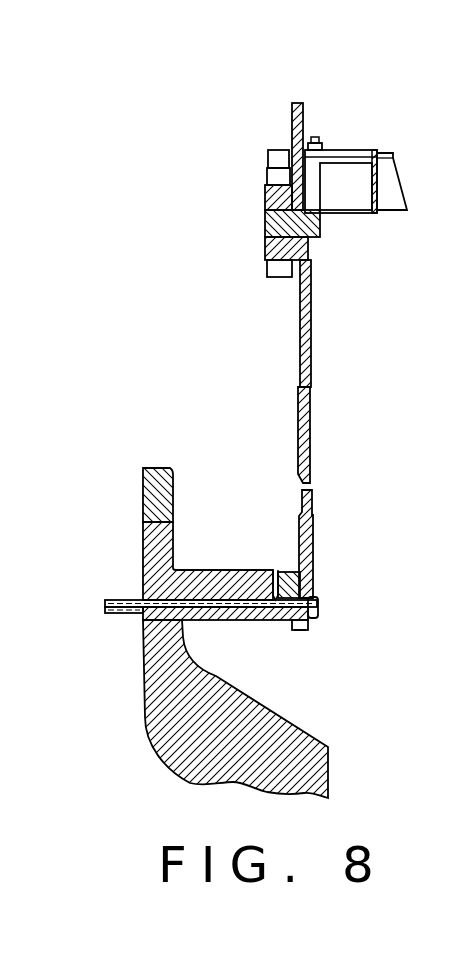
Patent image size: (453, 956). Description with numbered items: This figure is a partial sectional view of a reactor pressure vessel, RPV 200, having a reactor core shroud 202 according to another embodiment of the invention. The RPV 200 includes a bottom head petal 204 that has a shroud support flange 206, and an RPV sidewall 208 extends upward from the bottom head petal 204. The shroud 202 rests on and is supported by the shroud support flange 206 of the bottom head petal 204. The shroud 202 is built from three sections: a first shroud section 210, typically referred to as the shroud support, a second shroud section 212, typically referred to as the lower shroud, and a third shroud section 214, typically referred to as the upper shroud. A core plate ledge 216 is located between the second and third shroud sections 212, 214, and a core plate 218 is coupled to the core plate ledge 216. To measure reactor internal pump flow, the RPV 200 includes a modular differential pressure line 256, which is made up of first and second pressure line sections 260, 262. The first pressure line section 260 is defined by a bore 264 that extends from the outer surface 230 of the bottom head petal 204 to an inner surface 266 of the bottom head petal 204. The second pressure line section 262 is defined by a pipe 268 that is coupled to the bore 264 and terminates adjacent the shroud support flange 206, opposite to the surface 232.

The RPV 200 is at (236, 150).
The reactor core shroud 202 is at (331, 302).
The bottom head petal 204 is at (153, 748).
The shroud support flange 206 is at (318, 602).
The RPV sidewall 208 is at (143, 503).
The first shroud section 210 is at (310, 450).
The second shroud section 212 is at (312, 347).
The third shroud section 214 is at (304, 113).
The core plate ledge 216 is at (265, 225).
The core plate 218 is at (357, 150).
The outer surface 230 is at (145, 652).
The surface 232 is at (318, 598).
The differential pressure line 256 is at (207, 600).
The first pressure line section 260 is at (213, 620).
The second pressure line section 262 is at (308, 626).
The bore 264 is at (103, 603).
The inner surface 266 is at (272, 622).
The pipe 268 is at (298, 633).